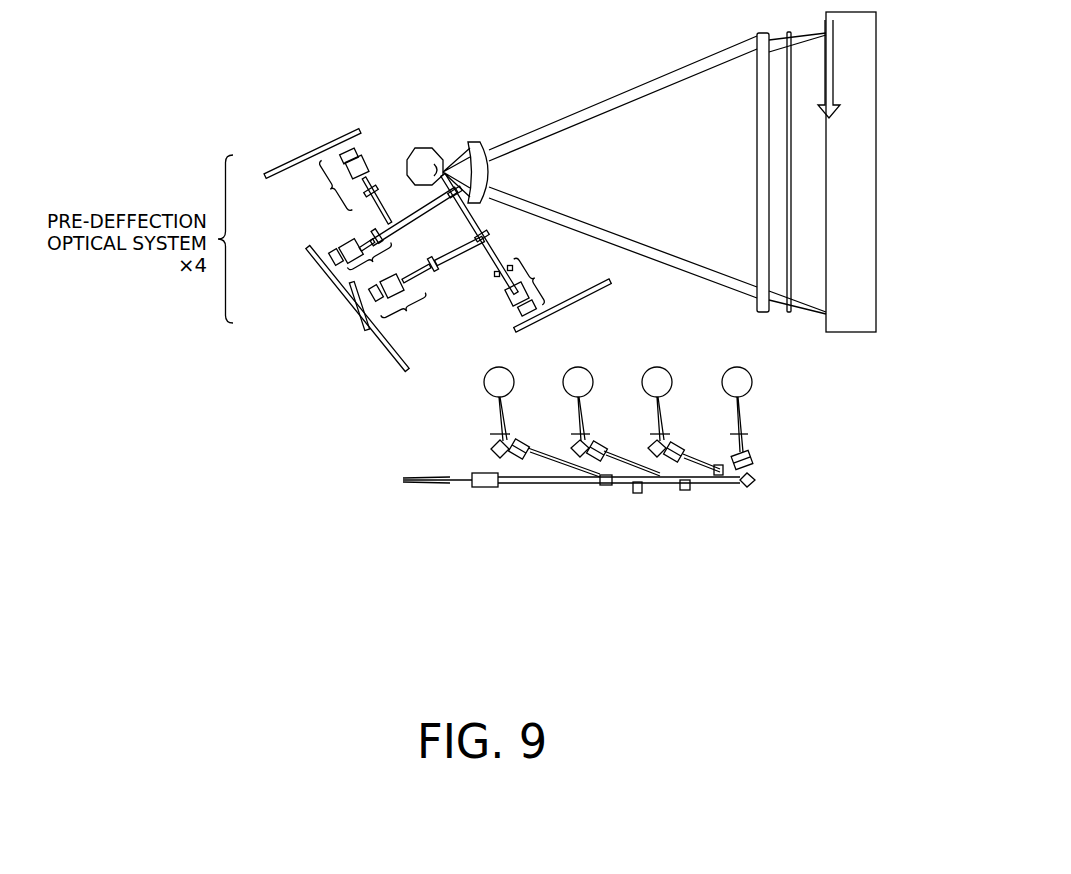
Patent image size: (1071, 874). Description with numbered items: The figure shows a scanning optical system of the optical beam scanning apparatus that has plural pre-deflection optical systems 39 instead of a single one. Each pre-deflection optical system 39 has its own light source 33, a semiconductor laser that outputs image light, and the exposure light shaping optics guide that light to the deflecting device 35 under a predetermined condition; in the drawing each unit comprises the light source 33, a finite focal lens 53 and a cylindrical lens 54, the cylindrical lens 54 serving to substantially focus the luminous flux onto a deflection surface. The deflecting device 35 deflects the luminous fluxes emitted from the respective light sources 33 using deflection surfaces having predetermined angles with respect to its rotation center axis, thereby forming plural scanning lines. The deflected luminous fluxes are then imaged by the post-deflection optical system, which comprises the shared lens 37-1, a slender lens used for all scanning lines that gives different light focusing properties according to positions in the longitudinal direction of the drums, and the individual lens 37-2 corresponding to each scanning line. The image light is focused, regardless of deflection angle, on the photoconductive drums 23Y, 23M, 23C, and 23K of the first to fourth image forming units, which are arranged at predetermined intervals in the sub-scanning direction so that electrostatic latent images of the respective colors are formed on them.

The photoconductive drum 23Y is at (500, 368).
The photoconductive drum 23M is at (579, 368).
The photoconductive drum 23C is at (659, 368).
The photoconductive drum 23K is at (737, 368).
The light source 33 is at (352, 151).
The deflecting device 35 is at (432, 151).
The shared lens 37-1 is at (492, 170).
The individual lens 37-2 is at (757, 188).
The pre-deflection optical system 39 is at (434, 243).
The finite focal lens 53 is at (367, 165).
The cylindrical lens 54 is at (378, 191).